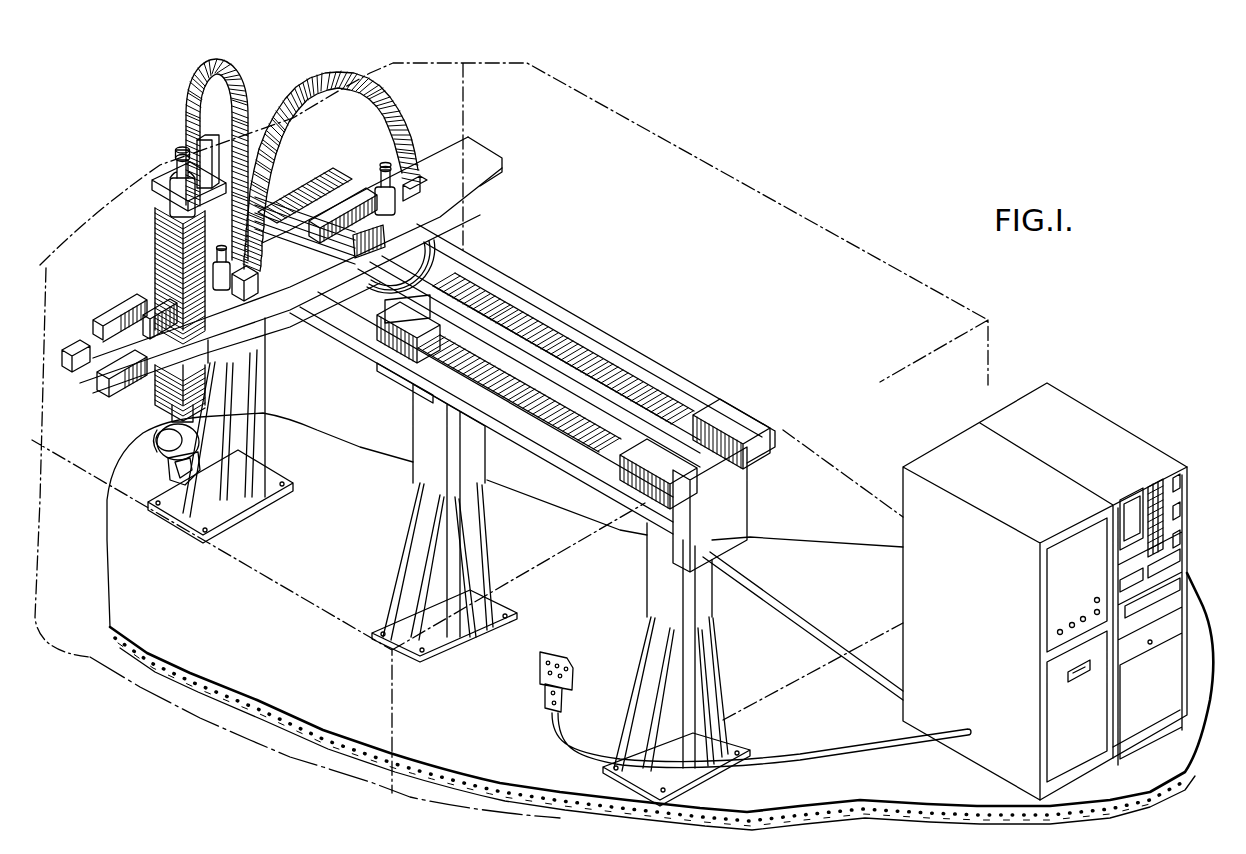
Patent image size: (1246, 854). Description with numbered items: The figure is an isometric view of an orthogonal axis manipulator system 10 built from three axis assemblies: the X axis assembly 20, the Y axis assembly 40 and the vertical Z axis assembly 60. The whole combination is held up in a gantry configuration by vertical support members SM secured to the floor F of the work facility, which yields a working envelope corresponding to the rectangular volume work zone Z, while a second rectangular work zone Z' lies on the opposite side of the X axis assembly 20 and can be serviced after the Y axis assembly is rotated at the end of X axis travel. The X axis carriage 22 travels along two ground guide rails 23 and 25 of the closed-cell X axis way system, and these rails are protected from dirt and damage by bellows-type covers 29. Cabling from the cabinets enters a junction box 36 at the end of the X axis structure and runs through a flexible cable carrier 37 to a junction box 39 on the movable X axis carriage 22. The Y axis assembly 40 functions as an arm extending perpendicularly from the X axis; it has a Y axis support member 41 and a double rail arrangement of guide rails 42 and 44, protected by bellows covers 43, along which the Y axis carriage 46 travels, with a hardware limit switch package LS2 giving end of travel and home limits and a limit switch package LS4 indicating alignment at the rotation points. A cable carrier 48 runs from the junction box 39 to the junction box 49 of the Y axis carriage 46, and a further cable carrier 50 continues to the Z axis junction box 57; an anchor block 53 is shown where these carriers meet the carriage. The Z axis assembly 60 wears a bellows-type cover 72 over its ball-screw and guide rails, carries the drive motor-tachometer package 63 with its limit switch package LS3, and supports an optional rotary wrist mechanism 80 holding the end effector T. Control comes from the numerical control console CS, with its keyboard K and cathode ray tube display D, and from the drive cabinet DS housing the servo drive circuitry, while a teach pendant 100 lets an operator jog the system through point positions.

The manipulator system 10 is at (538, 144).
The X axis assembly 20 is at (550, 263).
The X axis carriage 22 is at (457, 257).
The guide rail 23 is at (640, 380).
The guide rail 25 is at (573, 432).
The bellows-type covers 29 is at (380, 348).
The junction box 36 is at (740, 502).
The flexible cable carrier 37 is at (292, 170).
The junction box 39 is at (427, 187).
The Y axis assembly 40 is at (292, 362).
The Y axis support member 41 is at (314, 298).
The guide rail 42 is at (140, 386).
The bellows covers 43 is at (72, 345).
The guide rail 44 is at (107, 322).
The Y axis carriage 46 is at (147, 295).
The cable carrier 48 is at (310, 85).
The junction box 49 is at (252, 258).
The cable carrier 50 is at (195, 72).
The cable anchor block 53 is at (243, 283).
The junction box 57 is at (205, 165).
The Z axis assembly 60 is at (145, 229).
The drive motor-tachometer package 63 is at (170, 180).
The bellows-type cover 72 is at (160, 252).
The rotary wrist mechanism 80 is at (163, 441).
The teach pendant 100 is at (574, 675).
The hardware limit switch package LS2 is at (212, 268).
The hardware limit switch package LS3 is at (172, 160).
The limit switch package LS4 is at (377, 173).
The vertical support members SM is at (248, 392).
The end effector T is at (172, 480).
The work zone Z is at (467, 543).
The second work zone Z' is at (514, 224).
The floor F is at (478, 730).
The cathode ray tube display D is at (1127, 517).
The keyboard K is at (1157, 522).
The drive cabinet DS is at (935, 457).
The control console CS is at (1085, 412).